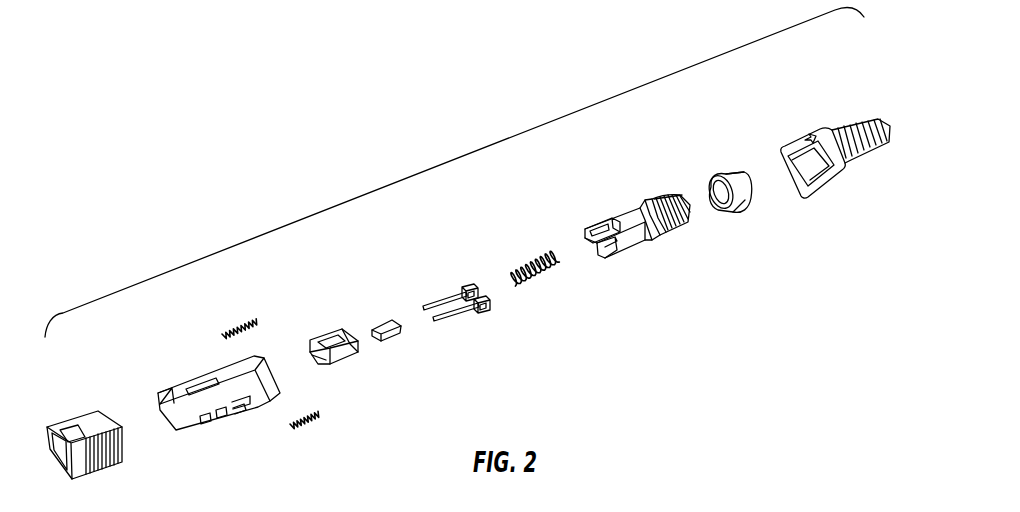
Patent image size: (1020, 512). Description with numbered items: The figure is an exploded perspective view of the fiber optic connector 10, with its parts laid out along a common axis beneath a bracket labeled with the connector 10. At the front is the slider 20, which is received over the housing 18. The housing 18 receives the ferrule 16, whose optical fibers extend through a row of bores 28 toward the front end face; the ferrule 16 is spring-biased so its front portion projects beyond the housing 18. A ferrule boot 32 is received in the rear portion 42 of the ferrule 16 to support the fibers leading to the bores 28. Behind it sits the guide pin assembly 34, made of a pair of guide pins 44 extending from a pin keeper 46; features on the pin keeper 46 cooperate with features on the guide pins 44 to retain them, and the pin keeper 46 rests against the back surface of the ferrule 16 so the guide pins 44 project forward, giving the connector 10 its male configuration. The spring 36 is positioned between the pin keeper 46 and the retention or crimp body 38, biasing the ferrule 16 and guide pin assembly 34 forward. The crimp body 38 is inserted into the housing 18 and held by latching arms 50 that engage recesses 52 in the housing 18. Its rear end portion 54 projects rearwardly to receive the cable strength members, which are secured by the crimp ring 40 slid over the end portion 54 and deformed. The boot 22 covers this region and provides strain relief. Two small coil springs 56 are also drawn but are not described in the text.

The connector 10 is at (457, 159).
The ferrule 16 is at (338, 364).
The housing 18 is at (215, 368).
The slider 20 is at (75, 423).
The boot 22 is at (825, 192).
The bores 28 is at (297, 425).
The ferrule boot 32 is at (385, 318).
The guide pin assembly 34 is at (462, 272).
The spring 36 is at (540, 282).
The retention body (crimp body) 38 is at (667, 254).
The crimp ring 40 is at (716, 178).
The rear portion of the ferrule 42 is at (345, 330).
The guide pins 44 is at (435, 321).
The pin keeper 46 is at (470, 298).
The latching arms 50 is at (592, 225).
The recesses 52 is at (233, 408).
The rear end portion 54 is at (655, 205).
The spring 56 is at (232, 320).